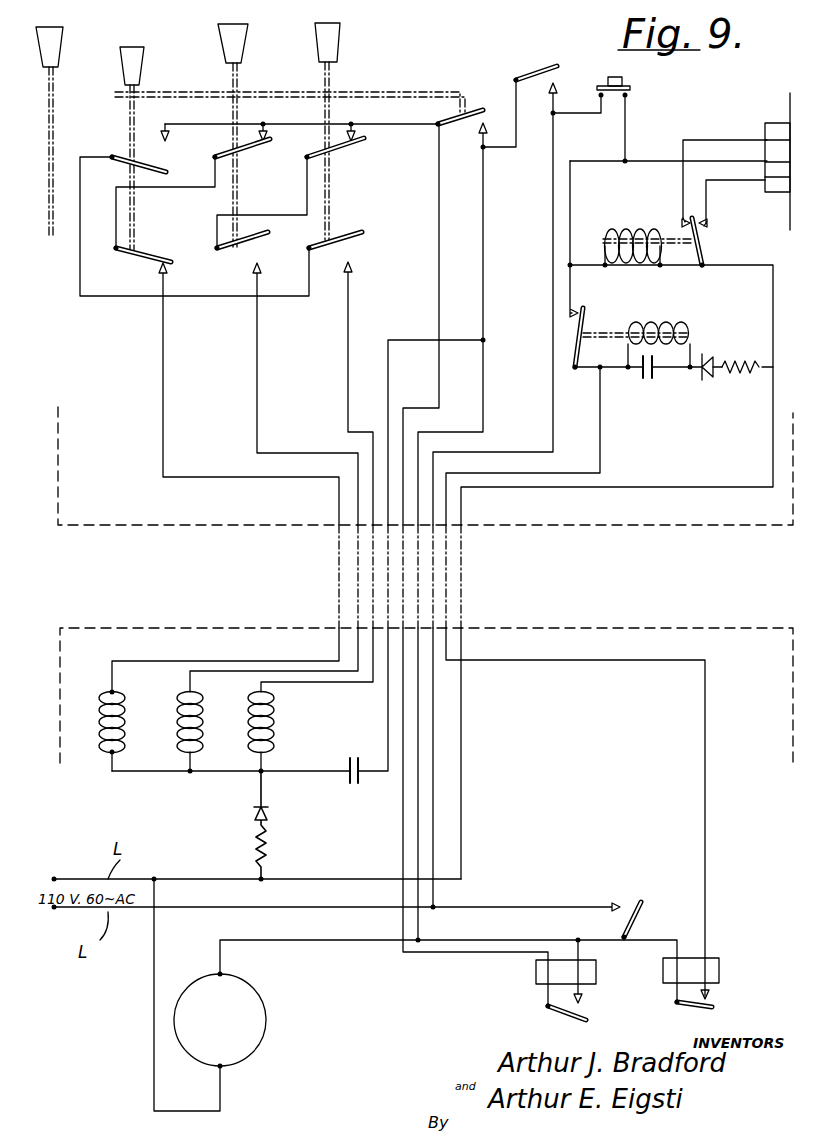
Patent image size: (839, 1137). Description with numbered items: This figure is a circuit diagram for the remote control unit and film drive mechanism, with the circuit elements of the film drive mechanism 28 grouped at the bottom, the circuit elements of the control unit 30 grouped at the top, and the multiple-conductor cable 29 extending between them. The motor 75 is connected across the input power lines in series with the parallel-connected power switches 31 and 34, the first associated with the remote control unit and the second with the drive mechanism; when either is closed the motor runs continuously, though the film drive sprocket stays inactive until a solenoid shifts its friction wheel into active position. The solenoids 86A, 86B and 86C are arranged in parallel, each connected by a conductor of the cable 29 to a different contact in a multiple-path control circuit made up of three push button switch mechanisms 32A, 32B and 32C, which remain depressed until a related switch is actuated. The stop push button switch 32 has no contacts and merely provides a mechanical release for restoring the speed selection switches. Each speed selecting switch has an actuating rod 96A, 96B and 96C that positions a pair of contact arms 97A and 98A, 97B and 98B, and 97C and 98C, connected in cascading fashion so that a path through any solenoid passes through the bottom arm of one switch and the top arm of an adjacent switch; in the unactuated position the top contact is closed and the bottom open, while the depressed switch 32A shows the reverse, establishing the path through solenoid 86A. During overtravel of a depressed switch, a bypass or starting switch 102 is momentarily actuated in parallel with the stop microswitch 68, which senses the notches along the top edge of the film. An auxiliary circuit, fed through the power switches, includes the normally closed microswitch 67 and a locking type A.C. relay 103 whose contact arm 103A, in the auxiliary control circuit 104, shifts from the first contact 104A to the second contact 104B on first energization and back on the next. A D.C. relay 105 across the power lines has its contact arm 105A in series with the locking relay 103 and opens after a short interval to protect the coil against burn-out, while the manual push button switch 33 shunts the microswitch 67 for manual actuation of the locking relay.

The film drive mechanism 28 is at (682, 624).
The multiple-conductor cable 29 is at (334, 590).
The control unit 30 is at (700, 528).
The power switch 31 is at (528, 62).
The stop push button switch 32 is at (58, 47).
The push button switch mechanism 32A is at (136, 52).
The push button switch mechanism 32B is at (240, 30).
The push button switch mechanism 32C is at (332, 30).
The manual push button switch 33 is at (612, 76).
The power switch 34 is at (630, 920).
The microswitch 67 is at (690, 1010).
The stop microswitch 68 is at (548, 1008).
The motor 75 is at (262, 1000).
The solenoid 86A is at (100, 748).
The solenoid 86B is at (178, 728).
The solenoid 86C is at (276, 726).
The actuating rod 96A is at (128, 117).
The actuating rod 96B is at (232, 113).
The actuating rod 96C is at (324, 111).
The contact arm 97A is at (152, 168).
The contact arm 97B is at (248, 150).
The contact arm 97C is at (348, 152).
The contact arm 98A is at (148, 250).
The contact arm 98B is at (258, 235).
The contact arm 98C is at (360, 238).
The bypass or starting switch 102 is at (452, 132).
The locking type A.C. relay 103 is at (628, 230).
The contact arm 103A is at (700, 232).
The auxiliary control circuit 104 is at (720, 138).
The first contact 104A is at (683, 208).
The second contact 104B is at (708, 204).
The D.C. relay 105 is at (660, 322).
The contact arm 105A is at (588, 318).